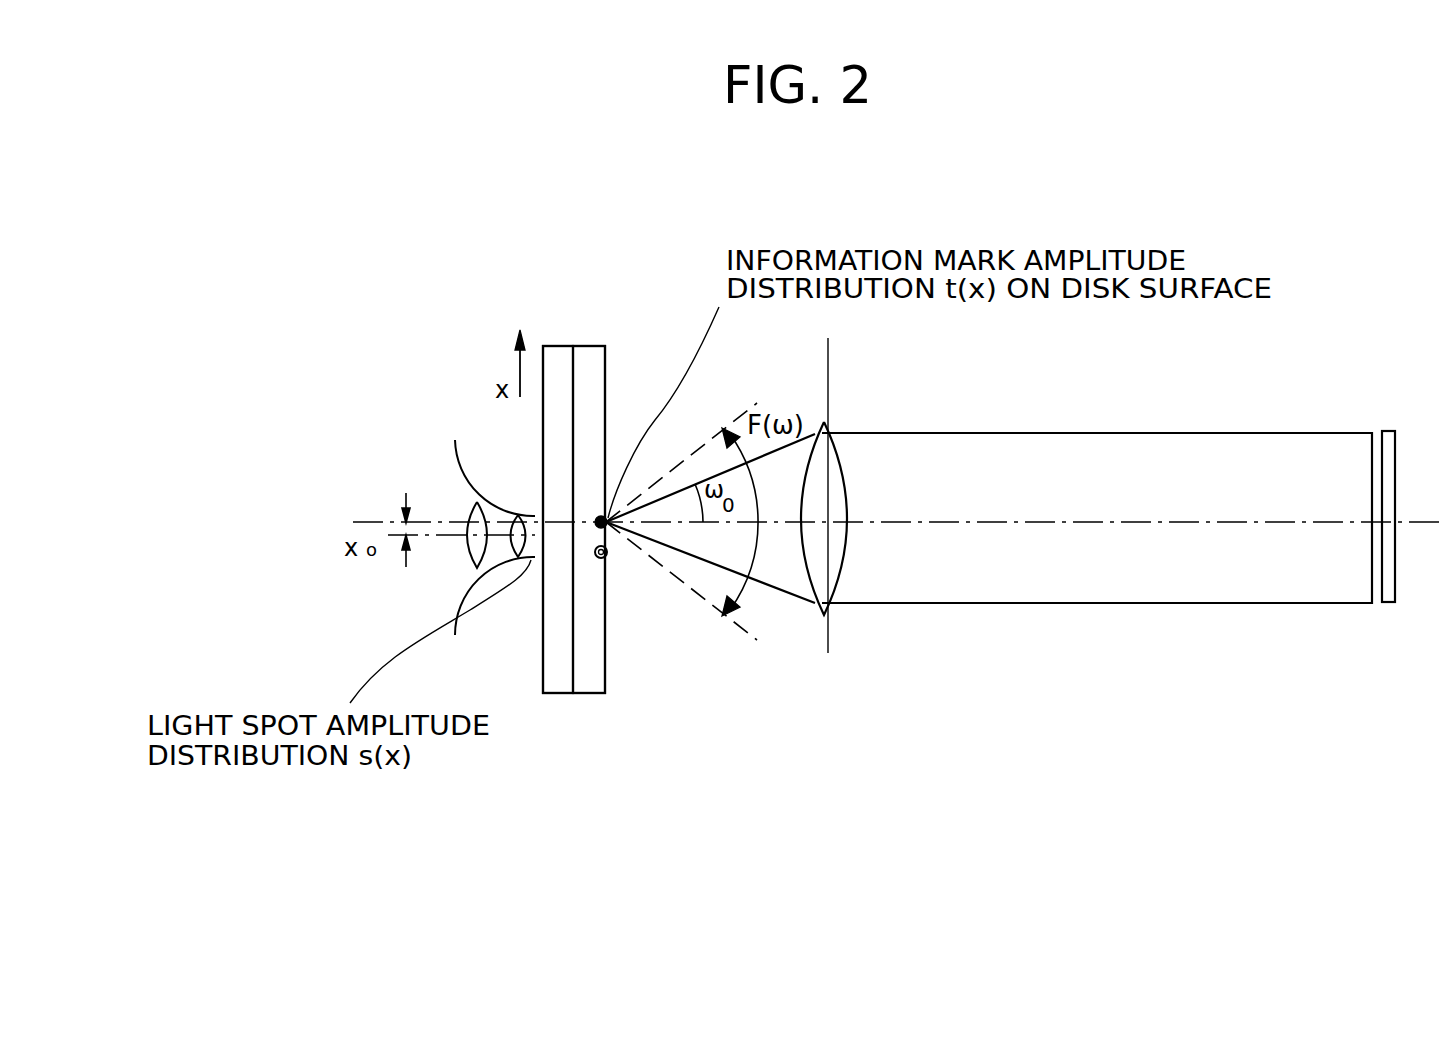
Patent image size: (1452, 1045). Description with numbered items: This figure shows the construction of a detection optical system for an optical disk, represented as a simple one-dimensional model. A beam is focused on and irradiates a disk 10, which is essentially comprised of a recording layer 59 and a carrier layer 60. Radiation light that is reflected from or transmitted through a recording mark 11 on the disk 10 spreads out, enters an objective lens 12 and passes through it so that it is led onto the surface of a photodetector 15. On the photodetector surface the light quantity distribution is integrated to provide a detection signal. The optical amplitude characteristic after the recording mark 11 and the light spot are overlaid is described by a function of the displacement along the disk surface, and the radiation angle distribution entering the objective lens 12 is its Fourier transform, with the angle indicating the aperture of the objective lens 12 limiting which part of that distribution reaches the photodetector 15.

The disk 10 is at (576, 346).
The recording mark 11 is at (603, 558).
The objective lens 12 is at (837, 603).
The photodetector 15 is at (1393, 431).
The recording layer 59 is at (605, 673).
The carrier layer 60 is at (557, 693).